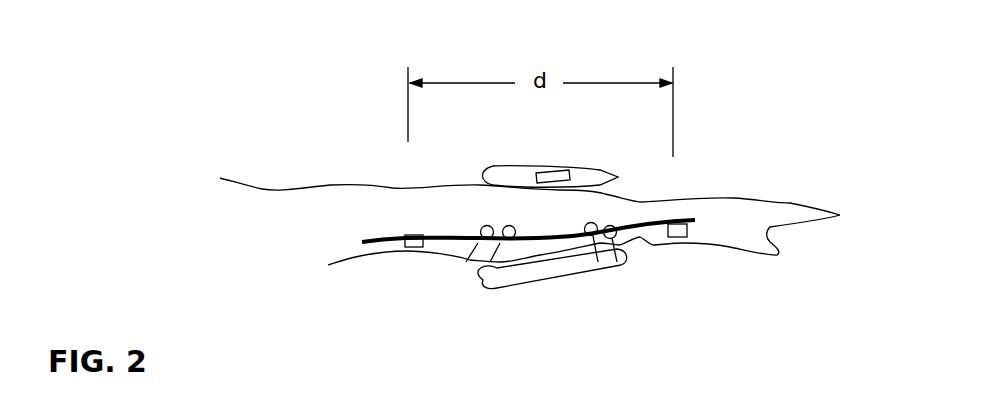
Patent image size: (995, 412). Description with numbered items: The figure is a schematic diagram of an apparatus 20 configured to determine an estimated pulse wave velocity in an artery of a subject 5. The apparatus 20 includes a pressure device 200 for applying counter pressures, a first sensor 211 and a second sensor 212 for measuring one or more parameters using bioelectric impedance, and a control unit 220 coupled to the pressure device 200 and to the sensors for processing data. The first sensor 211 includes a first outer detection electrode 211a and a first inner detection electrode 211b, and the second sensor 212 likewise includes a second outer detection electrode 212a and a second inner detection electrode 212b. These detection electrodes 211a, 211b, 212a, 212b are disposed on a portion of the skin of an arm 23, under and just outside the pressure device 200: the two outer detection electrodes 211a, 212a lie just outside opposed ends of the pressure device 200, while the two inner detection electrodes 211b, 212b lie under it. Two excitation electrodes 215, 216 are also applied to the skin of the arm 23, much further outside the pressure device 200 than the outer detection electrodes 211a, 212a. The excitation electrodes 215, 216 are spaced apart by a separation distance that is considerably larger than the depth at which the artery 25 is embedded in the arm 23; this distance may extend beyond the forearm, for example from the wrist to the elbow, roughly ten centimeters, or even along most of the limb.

The subject 5 is at (248, 195).
The arm 23 is at (322, 200).
The artery 25 is at (362, 243).
The apparatus 20 is at (752, 152).
The pressure device 200 is at (582, 167).
The control unit 220 is at (540, 172).
The first sensor 211 is at (483, 213).
The first outer detection electrode 211a is at (483, 240).
The first inner detection electrode 211b is at (505, 240).
The second sensor 212 is at (617, 212).
The second outer detection electrode 212a is at (618, 240).
The second inner detection electrode 212b is at (597, 240).
The excitation electrode 215 is at (413, 250).
The excitation electrode 216 is at (682, 240).